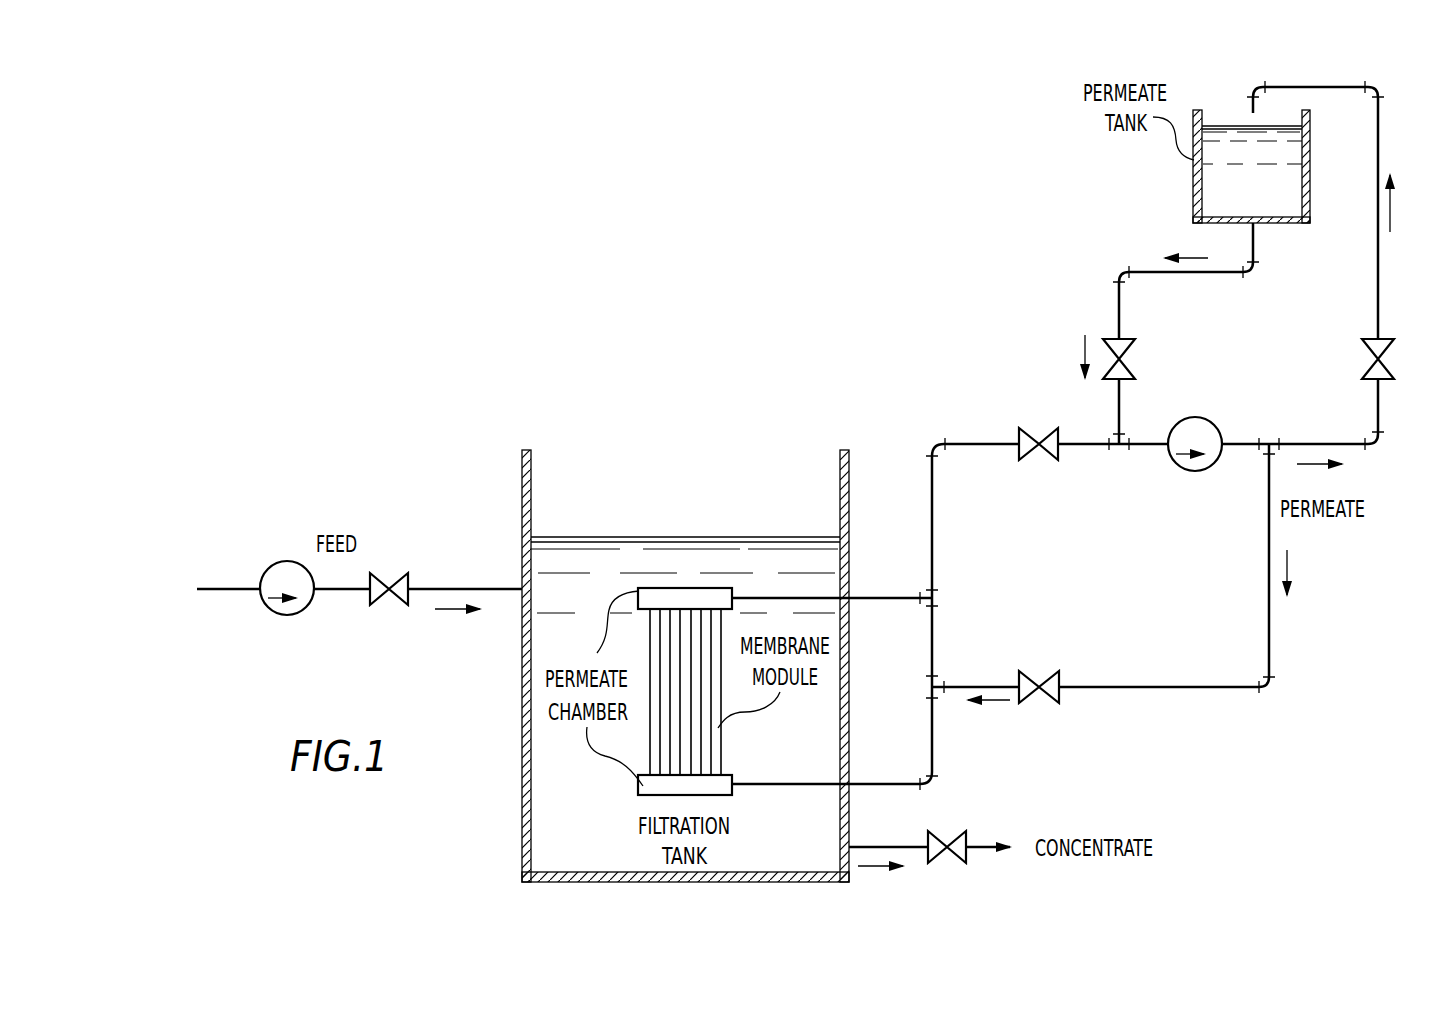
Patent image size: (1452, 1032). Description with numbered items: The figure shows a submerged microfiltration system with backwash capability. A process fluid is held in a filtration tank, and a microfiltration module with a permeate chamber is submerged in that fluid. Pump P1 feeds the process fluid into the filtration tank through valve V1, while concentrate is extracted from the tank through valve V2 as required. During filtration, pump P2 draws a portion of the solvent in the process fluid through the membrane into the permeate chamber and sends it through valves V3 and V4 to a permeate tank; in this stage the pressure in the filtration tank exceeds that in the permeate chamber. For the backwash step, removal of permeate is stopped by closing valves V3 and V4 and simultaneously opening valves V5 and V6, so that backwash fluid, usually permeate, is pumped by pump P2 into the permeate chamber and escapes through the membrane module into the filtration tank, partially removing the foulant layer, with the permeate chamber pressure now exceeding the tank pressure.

The pump P1 is at (287, 615).
The pump P2 is at (1211, 419).
The valve V1 is at (394, 592).
The valve V2 is at (940, 838).
The valve V3 is at (1040, 431).
The valve V4 is at (1389, 352).
The valve V5 is at (1127, 351).
The valve V6 is at (1036, 678).